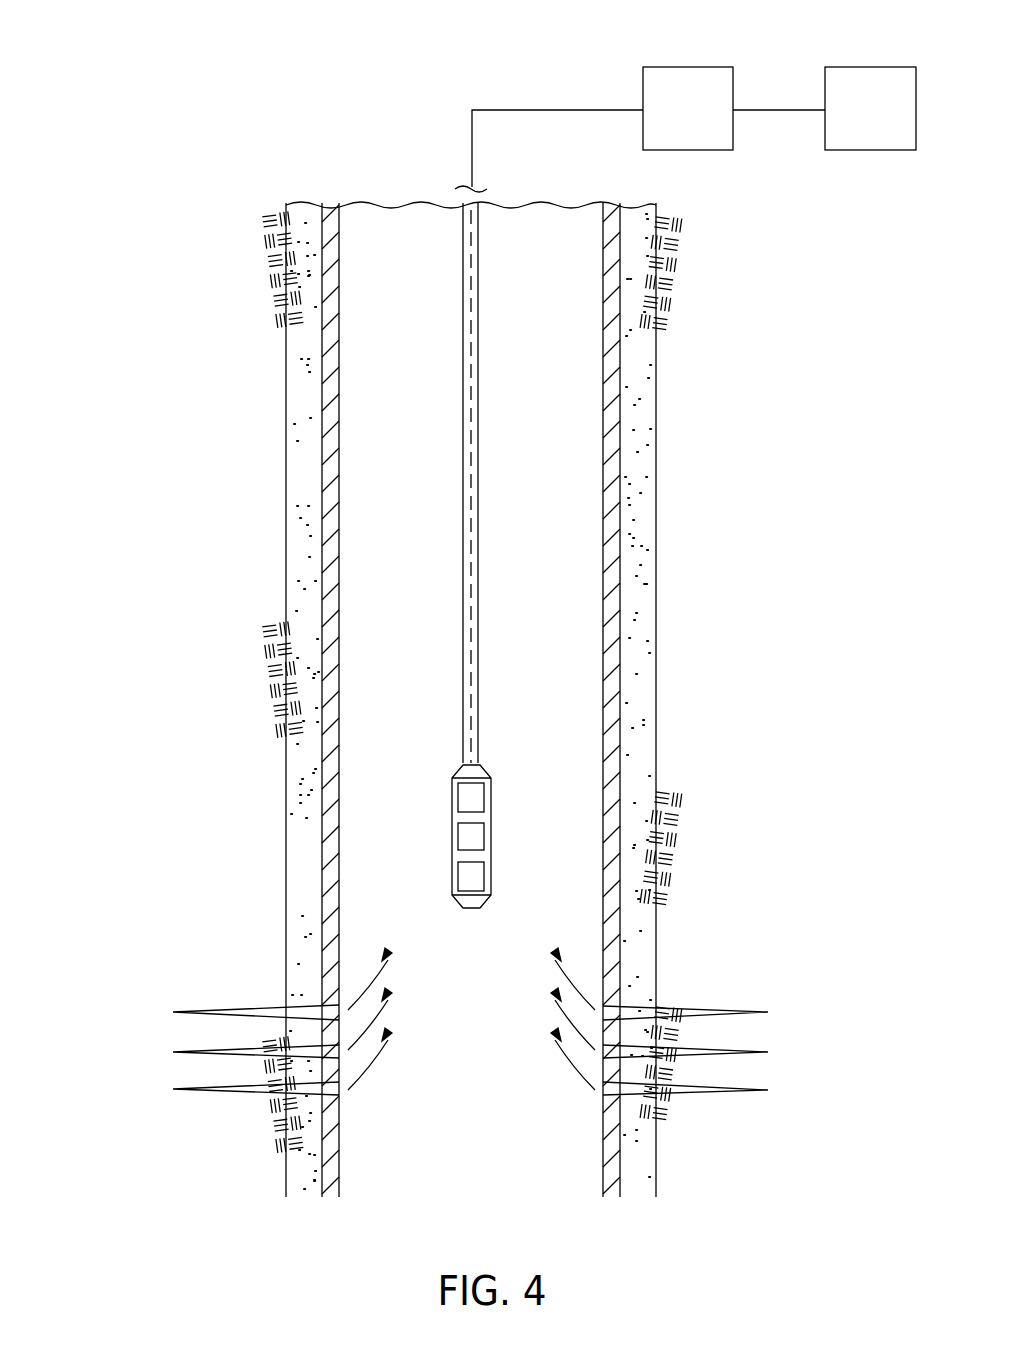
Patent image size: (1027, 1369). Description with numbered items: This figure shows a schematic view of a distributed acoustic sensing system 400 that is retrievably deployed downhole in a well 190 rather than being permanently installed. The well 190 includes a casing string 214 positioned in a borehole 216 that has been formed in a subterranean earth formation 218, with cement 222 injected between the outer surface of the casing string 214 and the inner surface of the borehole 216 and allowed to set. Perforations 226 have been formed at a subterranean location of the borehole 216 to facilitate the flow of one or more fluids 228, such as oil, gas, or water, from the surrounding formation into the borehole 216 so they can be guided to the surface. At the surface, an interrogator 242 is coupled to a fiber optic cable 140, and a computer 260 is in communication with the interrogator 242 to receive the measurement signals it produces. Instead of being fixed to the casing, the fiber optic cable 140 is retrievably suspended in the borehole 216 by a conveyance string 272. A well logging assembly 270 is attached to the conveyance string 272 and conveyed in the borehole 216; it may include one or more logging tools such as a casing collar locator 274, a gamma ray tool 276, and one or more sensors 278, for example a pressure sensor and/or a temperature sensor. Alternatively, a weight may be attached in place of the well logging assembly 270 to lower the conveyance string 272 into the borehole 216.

The distributed acoustic sensing system 400 is at (331, 64).
The well 190 is at (311, 158).
The fiber optic cable 140 is at (556, 108).
The interrogator 242 is at (672, 121).
The computer 260 is at (854, 121).
The casing string 214 is at (322, 397).
The cement 222 is at (300, 478).
The borehole 216 is at (290, 530).
The subterranean earth formation 218 is at (747, 511).
The well logging assembly 270 is at (500, 752).
The conveyance string 272 is at (463, 392).
The casing collar locator 274 is at (458, 870).
The gamma ray tool 276 is at (484, 834).
The sensors 278 is at (458, 795).
The perforations 226 is at (231, 1010).
The fluids 228 is at (377, 1080).